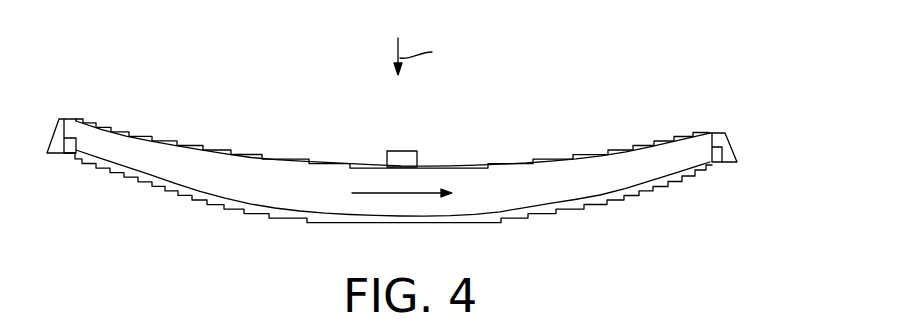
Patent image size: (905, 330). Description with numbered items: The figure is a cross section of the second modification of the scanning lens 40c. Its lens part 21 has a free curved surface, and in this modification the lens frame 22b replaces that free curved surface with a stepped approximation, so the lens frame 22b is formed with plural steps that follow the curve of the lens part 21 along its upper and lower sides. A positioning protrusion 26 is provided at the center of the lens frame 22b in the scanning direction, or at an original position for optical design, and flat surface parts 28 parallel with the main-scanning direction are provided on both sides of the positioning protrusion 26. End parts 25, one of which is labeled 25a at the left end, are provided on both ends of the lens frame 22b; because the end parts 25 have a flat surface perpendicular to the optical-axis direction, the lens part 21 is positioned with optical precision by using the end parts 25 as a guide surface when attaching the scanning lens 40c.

The scanning lens 40c is at (747, 112).
The lens part 21 is at (598, 178).
The lens frame 22b is at (392, 132).
The flat surface parts 28 is at (347, 164).
The positioning protrusion 26 is at (398, 151).
The left end piece 25a is at (66, 121).
The end parts 25 is at (713, 131).